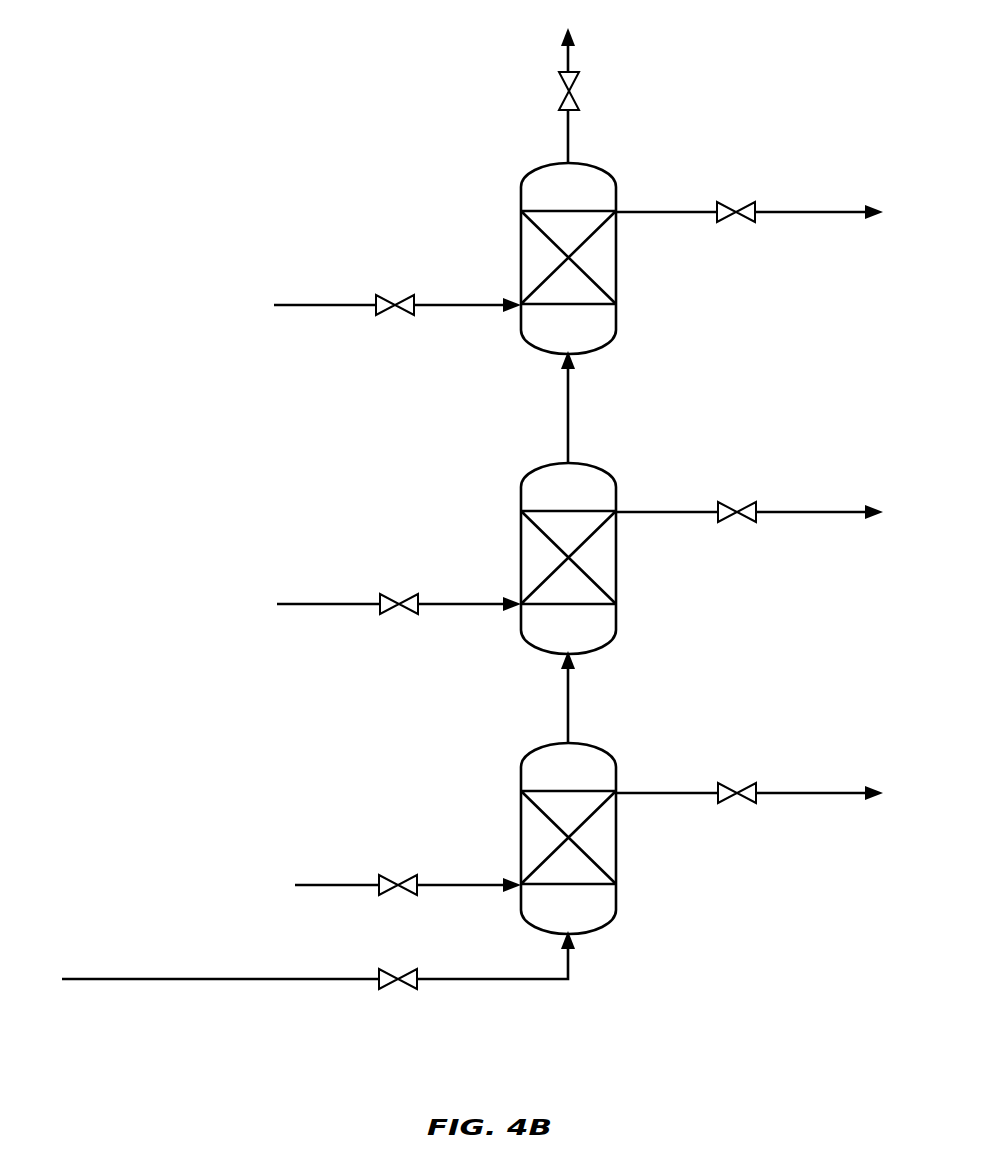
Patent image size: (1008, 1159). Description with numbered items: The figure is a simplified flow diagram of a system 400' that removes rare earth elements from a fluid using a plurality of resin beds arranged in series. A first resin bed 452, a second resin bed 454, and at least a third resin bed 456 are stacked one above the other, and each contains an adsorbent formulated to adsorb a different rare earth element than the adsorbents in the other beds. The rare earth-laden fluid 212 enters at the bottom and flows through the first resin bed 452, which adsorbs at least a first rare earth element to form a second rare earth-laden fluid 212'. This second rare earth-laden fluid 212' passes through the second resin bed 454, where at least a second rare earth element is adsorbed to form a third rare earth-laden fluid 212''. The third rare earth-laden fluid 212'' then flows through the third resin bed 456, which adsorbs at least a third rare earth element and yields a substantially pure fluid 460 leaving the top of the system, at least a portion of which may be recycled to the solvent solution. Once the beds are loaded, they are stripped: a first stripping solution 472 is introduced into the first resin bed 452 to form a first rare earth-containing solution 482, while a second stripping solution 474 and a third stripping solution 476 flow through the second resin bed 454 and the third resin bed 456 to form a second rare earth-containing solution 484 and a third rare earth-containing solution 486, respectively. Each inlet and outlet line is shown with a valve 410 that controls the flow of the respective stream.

The system 400' is at (460, 525).
The rare earth-laden fluid 212 is at (318, 931).
The second rare earth-laden fluid 212' is at (619, 697).
The third rare earth-laden fluid 212'' is at (622, 407).
The valve 410 is at (565, 92).
The first resin bed 452 is at (616, 853).
The second resin bed 454 is at (616, 573).
The third resin bed 456 is at (616, 273).
The substantially pure fluid 460 is at (572, 56).
The first stripping solution 472 is at (335, 885).
The second stripping solution 474 is at (335, 604).
The third stripping solution 476 is at (325, 305).
The first rare earth-containing solution 482 is at (840, 790).
The second rare earth-containing solution 484 is at (850, 510).
The third rare earth-containing solution 486 is at (850, 206).